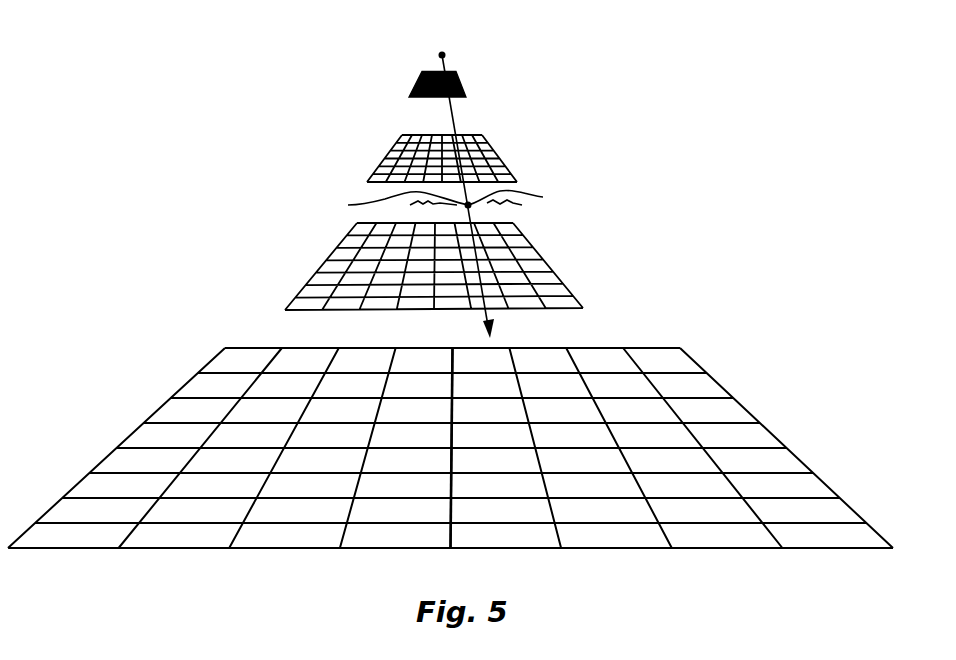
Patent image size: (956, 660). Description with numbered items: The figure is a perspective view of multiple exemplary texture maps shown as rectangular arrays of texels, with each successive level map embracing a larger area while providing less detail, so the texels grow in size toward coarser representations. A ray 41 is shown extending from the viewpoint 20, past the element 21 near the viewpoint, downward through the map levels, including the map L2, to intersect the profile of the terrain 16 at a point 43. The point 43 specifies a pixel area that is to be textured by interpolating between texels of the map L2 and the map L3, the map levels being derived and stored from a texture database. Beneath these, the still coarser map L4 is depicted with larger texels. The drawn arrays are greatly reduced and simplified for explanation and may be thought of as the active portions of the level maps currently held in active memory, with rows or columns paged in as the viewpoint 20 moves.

The viewpoint 20 is at (444, 51).
The condenser lens 21 is at (462, 86).
The ray 41 is at (453, 122).
The level L2 texture map L2 is at (506, 164).
The terrain 16 is at (543, 197).
The point 43 is at (348, 205).
The level L3 texture map L3 is at (540, 262).
The level L4 texture map L4 is at (765, 428).